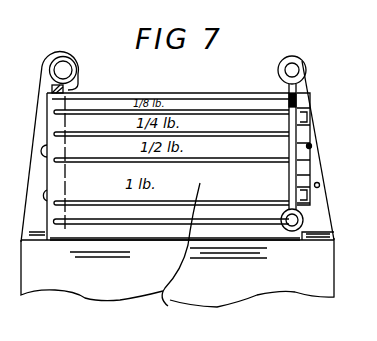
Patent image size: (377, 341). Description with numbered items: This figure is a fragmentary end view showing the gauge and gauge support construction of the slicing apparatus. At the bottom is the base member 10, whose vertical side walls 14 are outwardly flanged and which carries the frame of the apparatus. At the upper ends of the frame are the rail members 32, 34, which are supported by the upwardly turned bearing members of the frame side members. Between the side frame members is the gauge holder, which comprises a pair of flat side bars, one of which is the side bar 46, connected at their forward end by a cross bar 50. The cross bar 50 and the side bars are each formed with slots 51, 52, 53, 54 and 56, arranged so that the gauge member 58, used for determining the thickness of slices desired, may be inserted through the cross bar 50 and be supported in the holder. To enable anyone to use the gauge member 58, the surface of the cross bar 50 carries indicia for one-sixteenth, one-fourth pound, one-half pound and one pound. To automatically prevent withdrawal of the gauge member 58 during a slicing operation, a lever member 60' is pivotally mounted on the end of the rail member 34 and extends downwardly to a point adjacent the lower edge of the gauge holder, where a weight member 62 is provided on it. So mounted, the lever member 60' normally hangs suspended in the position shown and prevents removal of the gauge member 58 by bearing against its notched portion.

The base member 10 is at (117, 309).
The vertical side walls 14 is at (225, 277).
The rail member 32 is at (292, 70).
The rail member 34 is at (63, 70).
The side bar 46 is at (66, 90).
The cross bar 50 is at (181, 252).
The slot 51 is at (63, 97).
The slot 52 is at (219, 112).
The slot 53 is at (246, 134).
The slot 54 is at (309, 146).
The slot 56 is at (263, 196).
The gauge member 58 is at (170, 93).
The lever member 60' is at (327, 132).
The weight member 62 is at (292, 222).